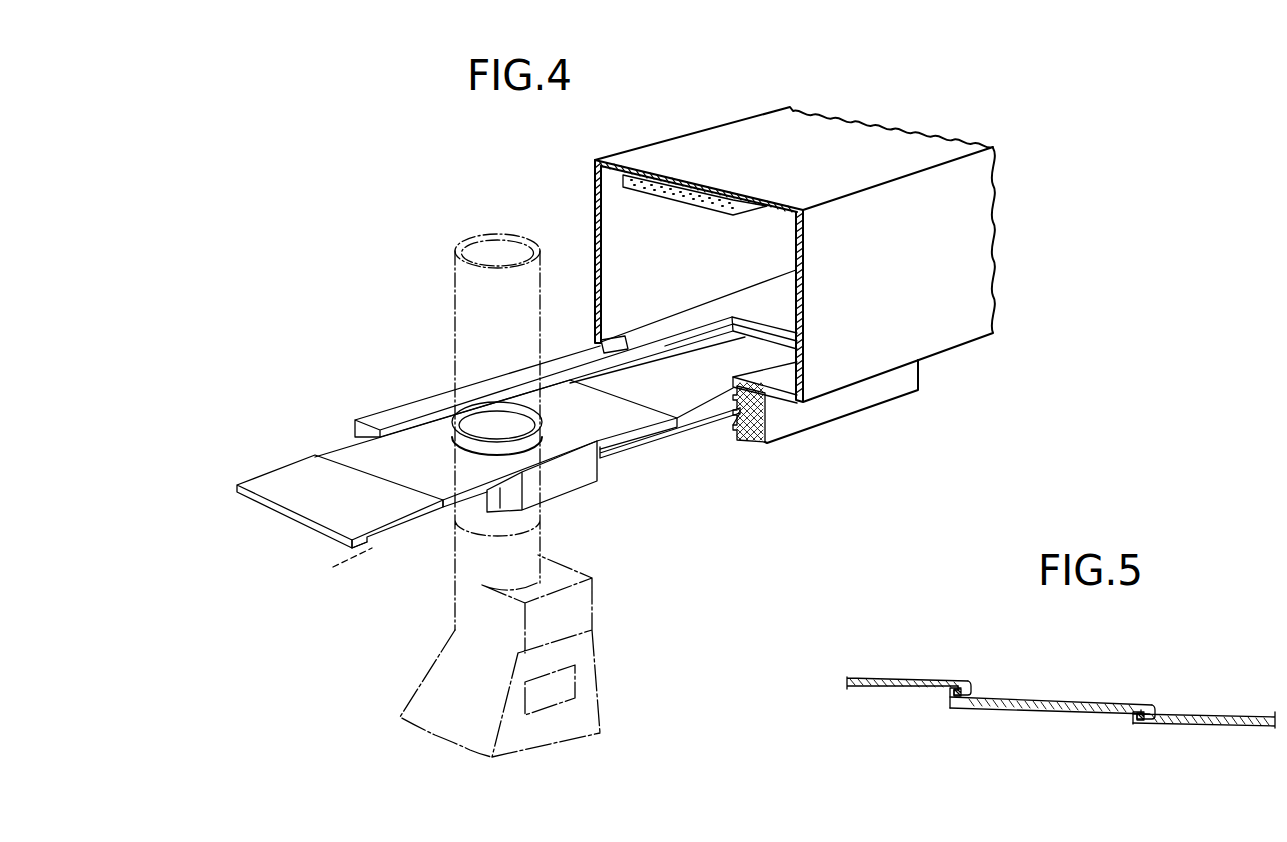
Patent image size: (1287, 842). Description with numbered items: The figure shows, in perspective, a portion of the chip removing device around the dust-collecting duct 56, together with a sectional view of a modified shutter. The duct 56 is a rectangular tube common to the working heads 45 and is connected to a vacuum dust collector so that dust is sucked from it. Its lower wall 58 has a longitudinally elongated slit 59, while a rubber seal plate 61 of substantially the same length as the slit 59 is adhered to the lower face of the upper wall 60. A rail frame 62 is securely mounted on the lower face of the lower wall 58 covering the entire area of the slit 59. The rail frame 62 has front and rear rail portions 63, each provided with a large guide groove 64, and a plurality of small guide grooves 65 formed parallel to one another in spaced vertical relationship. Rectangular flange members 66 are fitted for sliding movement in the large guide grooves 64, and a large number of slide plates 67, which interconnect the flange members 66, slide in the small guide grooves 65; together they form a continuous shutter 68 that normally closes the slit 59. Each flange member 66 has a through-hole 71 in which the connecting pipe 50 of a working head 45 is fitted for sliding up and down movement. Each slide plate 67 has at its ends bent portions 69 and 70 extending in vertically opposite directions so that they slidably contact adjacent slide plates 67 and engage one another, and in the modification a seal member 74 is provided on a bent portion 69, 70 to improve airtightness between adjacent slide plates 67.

In FIG. 4, the working head 45 is at (608, 642).
In FIG. 4, the connecting pipe 50 is at (453, 294).
In FIG. 4, the duct 56 is at (976, 233).
In FIG. 4, the lower wall 58 is at (780, 385).
In FIG. 4, the slit 59 is at (680, 332).
In FIG. 4, the upper wall 60 is at (747, 140).
In FIG. 4, the seal plate 61 is at (657, 198).
In FIG. 4, the rail frame 62 is at (920, 378).
In FIG. 4, the rail portion 63 is at (402, 413).
In FIG. 4, the large guide groove 64 is at (733, 430).
In FIG. 4, the small guide groove 65 is at (768, 446).
In FIG. 4, the flange member 66 is at (575, 478).
In FIG. 4, the slide plate 67 is at (302, 482).
In FIG. 5, the slide plate 67 is at (893, 678).
In FIG. 4, the shutter 68 is at (630, 455).
In FIG. 5, the bent portion 69 is at (950, 694).
In FIG. 4, the bent portion 70 is at (327, 540).
In FIG. 5, the bent portion 70 is at (972, 688).
In FIG. 4, the through-hole 71 is at (487, 418).
In FIG. 5, the seal member 74 is at (955, 702).